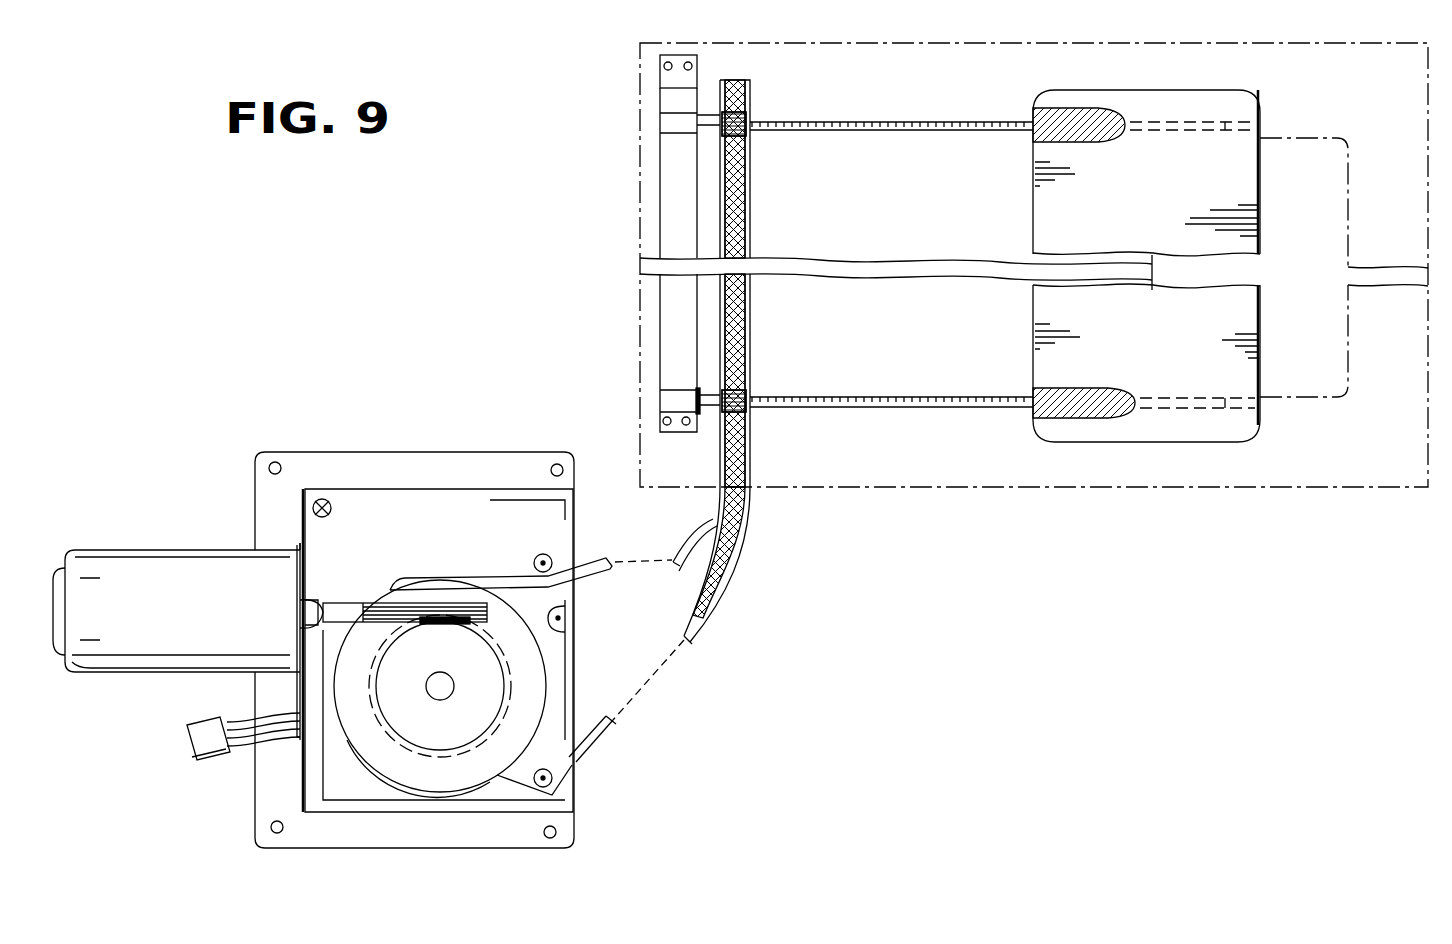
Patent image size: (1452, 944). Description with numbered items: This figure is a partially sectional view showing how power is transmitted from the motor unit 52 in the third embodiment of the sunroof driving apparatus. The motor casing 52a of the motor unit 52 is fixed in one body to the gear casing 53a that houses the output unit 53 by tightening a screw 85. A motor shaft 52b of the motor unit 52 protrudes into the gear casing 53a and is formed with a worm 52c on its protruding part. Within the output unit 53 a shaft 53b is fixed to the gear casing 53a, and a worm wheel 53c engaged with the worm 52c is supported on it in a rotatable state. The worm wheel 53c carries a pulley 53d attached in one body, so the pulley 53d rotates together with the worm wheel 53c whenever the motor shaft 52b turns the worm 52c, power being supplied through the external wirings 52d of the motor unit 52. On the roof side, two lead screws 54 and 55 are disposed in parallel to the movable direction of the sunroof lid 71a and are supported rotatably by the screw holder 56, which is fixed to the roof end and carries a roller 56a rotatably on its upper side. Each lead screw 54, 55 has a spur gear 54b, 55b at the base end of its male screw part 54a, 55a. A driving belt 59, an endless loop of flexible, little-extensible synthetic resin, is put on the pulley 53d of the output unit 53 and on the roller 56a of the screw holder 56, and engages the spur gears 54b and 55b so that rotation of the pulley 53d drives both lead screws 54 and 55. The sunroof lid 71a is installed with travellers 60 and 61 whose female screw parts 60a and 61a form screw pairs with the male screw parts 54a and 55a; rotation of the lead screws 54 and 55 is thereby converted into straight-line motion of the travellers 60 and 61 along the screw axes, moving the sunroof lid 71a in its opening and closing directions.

The motor unit 52 is at (162, 550).
The motor casing 52a is at (218, 575).
The motor shaft 52b is at (350, 603).
The worm 52c is at (452, 603).
The external wirings 52d is at (200, 719).
The output unit 53 is at (511, 522).
The gear casing 53a is at (340, 489).
The shaft 53b is at (455, 686).
The worm wheel 53c is at (330, 623).
The pulley 53d is at (543, 797).
The screw 85 is at (280, 552).
The lead screw 54 is at (925, 407).
The male screw part 54a is at (850, 407).
The spur gear 54b is at (722, 398).
The lead screw 55 is at (910, 122).
The male screw part 55a is at (830, 122).
The spur gear 55b is at (722, 146).
The screw holder 56 is at (660, 208).
The roller 56a is at (720, 80).
The driving belt 59 is at (750, 536).
The traveller 60 is at (1035, 412).
The female screw part 60a is at (1065, 418).
The traveller 61 is at (1033, 122).
The female screw part 61a is at (1080, 108).
The sunroof lid 71a is at (1199, 91).